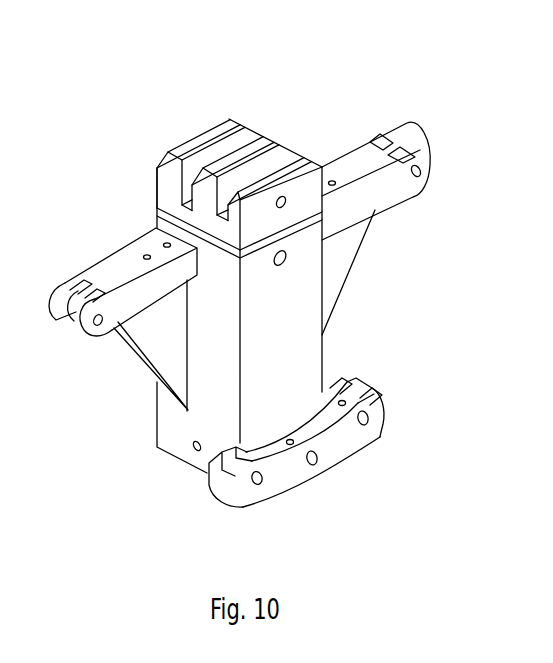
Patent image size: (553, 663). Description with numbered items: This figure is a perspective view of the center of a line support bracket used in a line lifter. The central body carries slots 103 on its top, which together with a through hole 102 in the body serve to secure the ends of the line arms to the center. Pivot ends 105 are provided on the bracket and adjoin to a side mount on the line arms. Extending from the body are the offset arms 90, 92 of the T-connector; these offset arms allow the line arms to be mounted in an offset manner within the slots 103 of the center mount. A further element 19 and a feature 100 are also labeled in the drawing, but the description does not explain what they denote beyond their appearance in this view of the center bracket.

The slots 103 is at (246, 132).
The pivot ends 105 is at (423, 141).
The pivot hole 100 is at (428, 177).
The offset arm 90 is at (432, 186).
The through hole 102 is at (284, 206).
The offset arm 92 is at (138, 311).
The curved bracket 19 is at (353, 440).